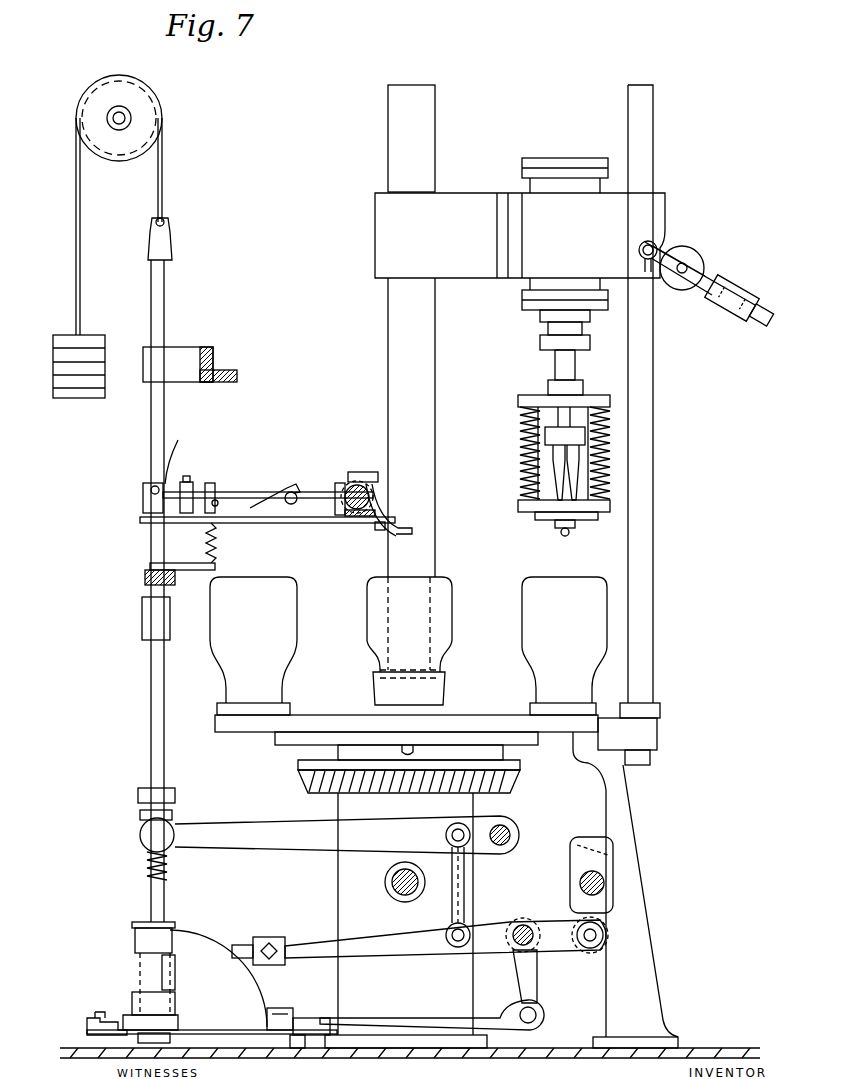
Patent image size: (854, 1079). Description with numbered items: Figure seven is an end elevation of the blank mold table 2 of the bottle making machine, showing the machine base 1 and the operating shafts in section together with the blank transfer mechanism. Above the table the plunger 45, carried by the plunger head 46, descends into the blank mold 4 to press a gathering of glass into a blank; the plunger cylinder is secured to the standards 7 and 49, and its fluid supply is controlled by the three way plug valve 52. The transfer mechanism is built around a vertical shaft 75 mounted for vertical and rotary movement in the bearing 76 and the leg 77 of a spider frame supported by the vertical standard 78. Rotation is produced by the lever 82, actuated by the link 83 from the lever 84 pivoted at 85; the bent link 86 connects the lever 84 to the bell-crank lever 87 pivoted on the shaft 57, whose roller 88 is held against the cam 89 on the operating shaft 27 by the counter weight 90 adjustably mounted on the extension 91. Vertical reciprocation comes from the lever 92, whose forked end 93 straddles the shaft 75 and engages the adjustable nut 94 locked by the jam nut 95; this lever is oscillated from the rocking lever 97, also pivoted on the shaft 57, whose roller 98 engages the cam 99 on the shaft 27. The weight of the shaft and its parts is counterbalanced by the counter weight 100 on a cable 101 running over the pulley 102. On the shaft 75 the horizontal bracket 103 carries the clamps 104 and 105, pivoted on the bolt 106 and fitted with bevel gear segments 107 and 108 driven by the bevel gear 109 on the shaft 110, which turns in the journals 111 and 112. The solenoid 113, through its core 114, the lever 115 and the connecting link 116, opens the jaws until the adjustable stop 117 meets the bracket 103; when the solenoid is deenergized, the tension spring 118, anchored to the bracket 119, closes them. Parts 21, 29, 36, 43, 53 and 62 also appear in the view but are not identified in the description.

The base frame 1 is at (563, 1028).
The table 2 is at (308, 715).
The blank mold 4 is at (287, 614).
The standard 7 is at (423, 146).
The rod bracket 21 is at (160, 970).
The main operating shaft 27 is at (605, 890).
The pivot bearing 29 is at (580, 883).
The bearing 36 is at (386, 878).
The gear wheel 43 is at (298, 768).
The plunger 45 is at (562, 532).
The plunger head 46 is at (518, 400).
The standard 49 is at (653, 586).
The three way plug valve 52 is at (686, 291).
The lever pivot 53 is at (639, 256).
The shaft 57 is at (520, 922).
The handle 62 is at (745, 320).
The vertical transfer shaft 75 is at (168, 300).
The bearing 76 is at (132, 935).
The leg 77 is at (198, 360).
The vertical standard 78 is at (185, 935).
The lever 82 is at (115, 1016).
The link 83 is at (212, 1030).
The lever 84 is at (312, 1018).
The pivot 85 is at (295, 1048).
The bent link 86 is at (418, 1018).
The bell-crank lever 87 is at (520, 976).
The roller 88 is at (600, 922).
The cam 89 is at (508, 826).
The counter weight 90 is at (268, 937).
The extension 91 is at (325, 946).
The lever 92 is at (240, 826).
The forked end 93 is at (163, 850).
The adjustable nut 94 is at (140, 814).
The jam nut 95 is at (138, 792).
The rocking lever 97 is at (470, 946).
The roller 98 is at (452, 902).
The cam 99 is at (572, 844).
The counter weight 100 is at (88, 398).
The cable 101 is at (82, 244).
The pulley 102 is at (142, 112).
The horizontal bracket 103 is at (340, 490).
The clamp 104 is at (404, 536).
The clamp 105 is at (378, 531).
The bolt 106 is at (366, 472).
The bevel gear segment 107 is at (355, 518).
The bevel gear segment 108 is at (348, 488).
The bevel gear 109 is at (356, 480).
The shaft 110 is at (232, 490).
The journal 111 is at (334, 505).
The journal 112 is at (192, 482).
The solenoid 113 is at (142, 612).
The core 114 is at (150, 566).
The lever 115 is at (179, 438).
The connecting link 116 is at (207, 548).
The adjustable stop 117 is at (262, 522).
The tension spring 118 is at (143, 522).
The bracket 119 is at (175, 583).